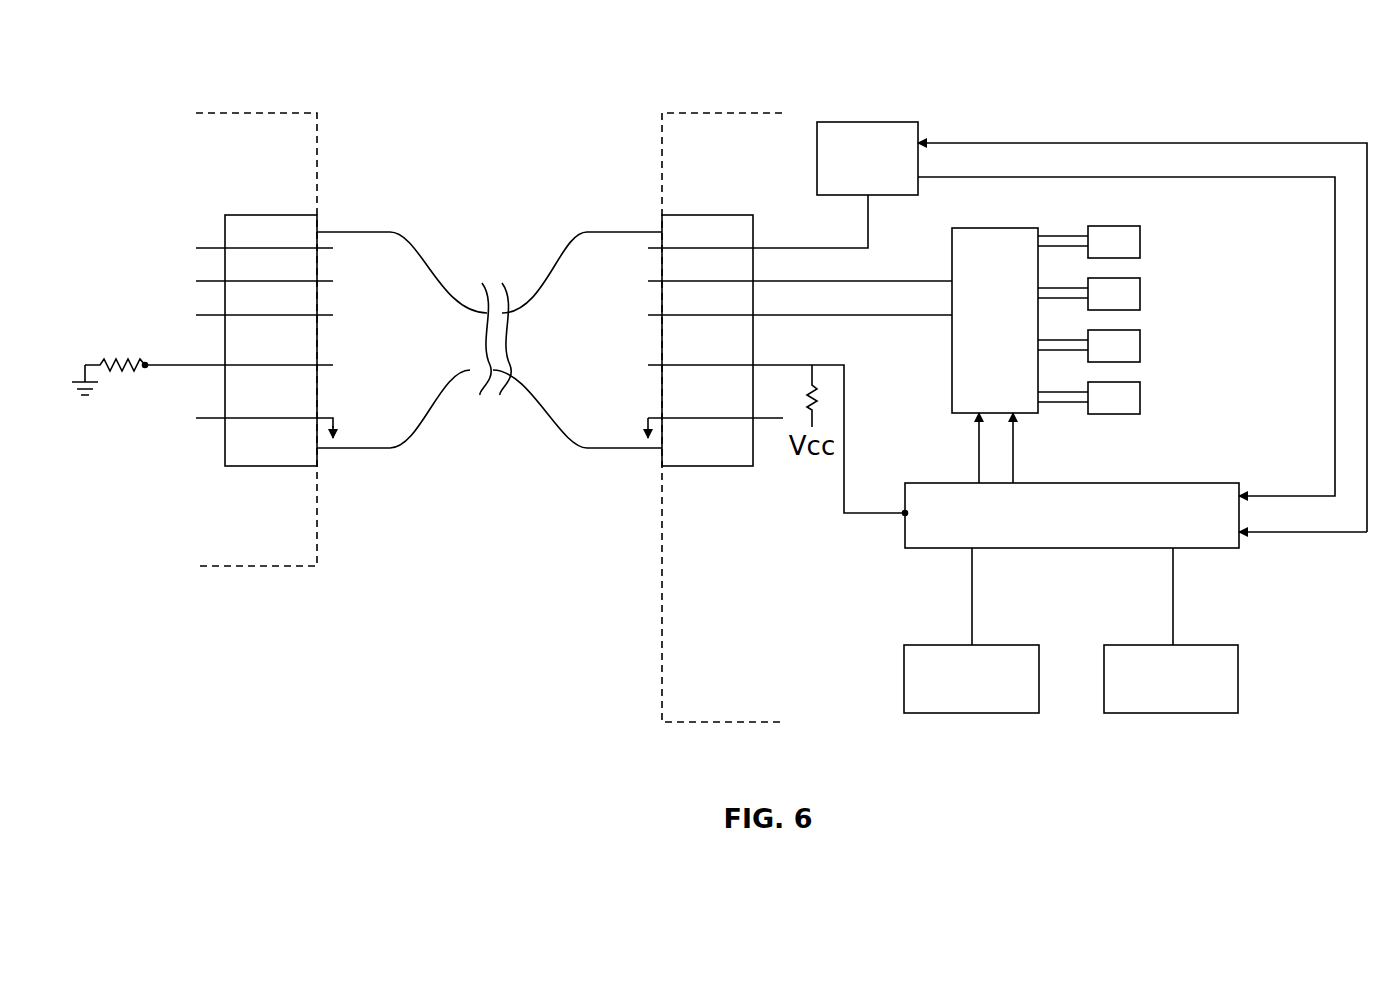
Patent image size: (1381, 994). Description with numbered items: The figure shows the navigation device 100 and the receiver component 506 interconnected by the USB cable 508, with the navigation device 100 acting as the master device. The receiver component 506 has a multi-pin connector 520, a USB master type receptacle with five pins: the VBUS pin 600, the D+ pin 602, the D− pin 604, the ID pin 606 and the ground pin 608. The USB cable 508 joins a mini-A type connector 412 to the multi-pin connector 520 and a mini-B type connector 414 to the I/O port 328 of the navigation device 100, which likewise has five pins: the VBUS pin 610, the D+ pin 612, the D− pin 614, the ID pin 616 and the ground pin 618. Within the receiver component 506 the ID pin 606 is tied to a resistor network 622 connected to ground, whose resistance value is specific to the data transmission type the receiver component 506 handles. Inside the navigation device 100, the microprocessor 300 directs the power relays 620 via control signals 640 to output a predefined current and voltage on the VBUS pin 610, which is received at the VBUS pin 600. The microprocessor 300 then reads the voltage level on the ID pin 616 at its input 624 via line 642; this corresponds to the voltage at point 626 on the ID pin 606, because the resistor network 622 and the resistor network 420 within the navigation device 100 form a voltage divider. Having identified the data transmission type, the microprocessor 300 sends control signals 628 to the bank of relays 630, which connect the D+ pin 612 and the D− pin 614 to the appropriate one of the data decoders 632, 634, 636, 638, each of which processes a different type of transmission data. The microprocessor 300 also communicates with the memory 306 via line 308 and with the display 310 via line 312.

The navigation device 100 is at (730, 112).
The microprocessor 300 is at (1170, 483).
The memory 306 is at (1205, 644).
The line 308 is at (1175, 592).
The display 310 is at (1005, 644).
The line 312 is at (975, 592).
The I/O port 328 is at (708, 214).
The mini-A type connector 412 is at (352, 232).
The mini-B type connector 414 is at (632, 232).
The resistor network 420 is at (818, 397).
The receiver component 506 is at (268, 112).
The USB cable 508 is at (490, 272).
The multi-pin connector 520 is at (273, 214).
The VBUS pin 600 is at (210, 246).
The D+ pin 602 is at (210, 280).
The D− pin 604 is at (210, 313).
The ID pin 606 is at (210, 364).
The ground pin 608 is at (210, 416).
The VBUS pin 610 is at (783, 247).
The D+ pin 612 is at (783, 280).
The D− pin 614 is at (783, 314).
The ID pin 616 is at (783, 364).
The ground pin 618 is at (768, 421).
The power relays 620 is at (868, 122).
The resistor network 622 is at (110, 362).
The input 624 is at (905, 513).
The point 626 is at (145, 367).
The control signals 628 is at (1005, 460).
The bank of relays 630 is at (997, 228).
The data decoder 632 is at (1140, 243).
The data decoder 634 is at (1140, 295).
The data decoder 636 is at (1140, 347).
The data decoder 638 is at (1140, 399).
The control signals 640 is at (1222, 147).
The line 642 is at (846, 440).